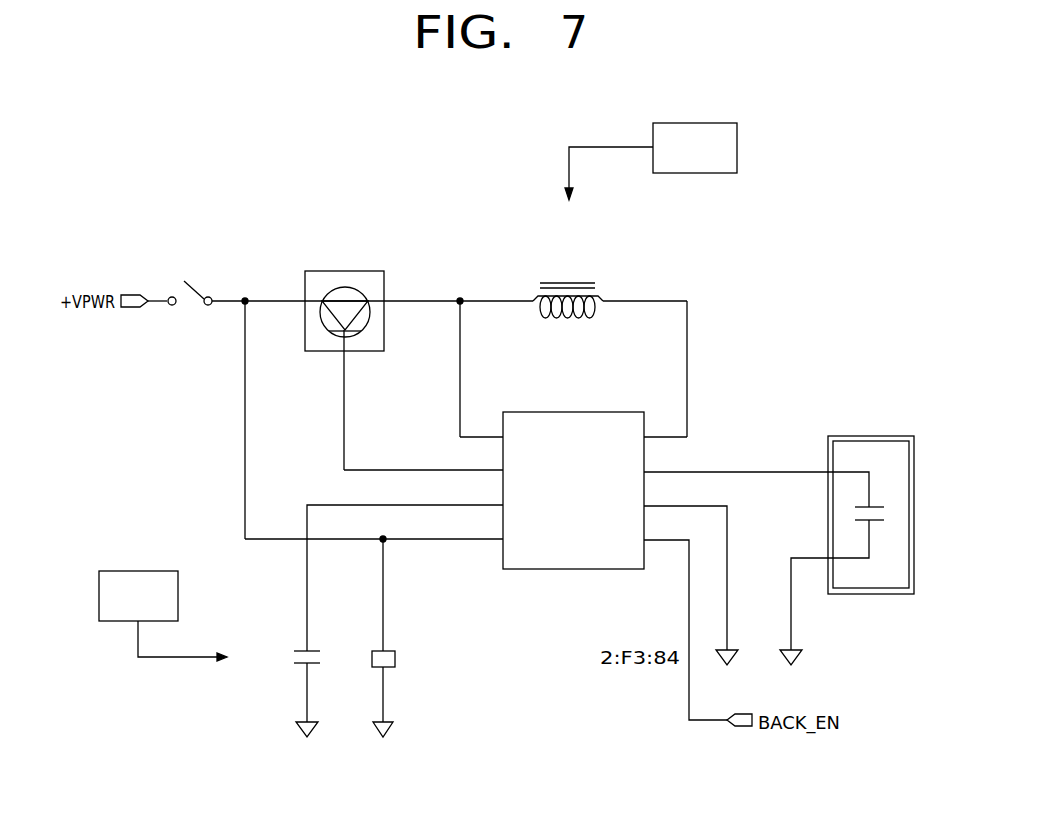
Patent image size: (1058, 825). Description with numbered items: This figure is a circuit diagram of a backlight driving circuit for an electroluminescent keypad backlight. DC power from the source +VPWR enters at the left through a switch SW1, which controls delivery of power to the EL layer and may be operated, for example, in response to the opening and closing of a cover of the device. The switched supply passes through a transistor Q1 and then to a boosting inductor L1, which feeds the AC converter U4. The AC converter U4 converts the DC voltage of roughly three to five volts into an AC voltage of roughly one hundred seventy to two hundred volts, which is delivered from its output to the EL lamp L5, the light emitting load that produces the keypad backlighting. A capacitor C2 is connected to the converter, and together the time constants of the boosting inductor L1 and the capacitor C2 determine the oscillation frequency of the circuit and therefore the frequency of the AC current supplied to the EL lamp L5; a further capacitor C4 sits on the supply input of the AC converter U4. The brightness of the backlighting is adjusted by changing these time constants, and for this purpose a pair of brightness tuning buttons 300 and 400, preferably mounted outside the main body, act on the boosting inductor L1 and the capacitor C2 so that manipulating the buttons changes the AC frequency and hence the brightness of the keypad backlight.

The brightness tuning button 300 is at (133, 578).
The brightness tuning button 400 is at (725, 152).
The switch SW1 is at (190, 280).
The transistor Q1 is at (344, 297).
The boosting inductor L1 is at (564, 270).
The AC converter U4 is at (575, 466).
The capacitor C2 is at (276, 656).
The capacitor C4 is at (480, 659).
The EL lamp L5 is at (869, 487).